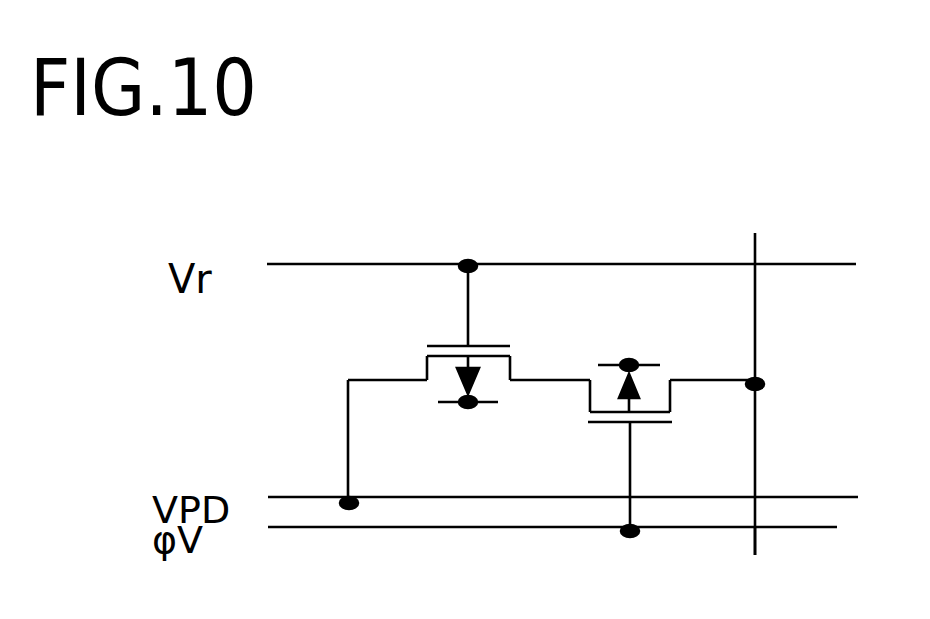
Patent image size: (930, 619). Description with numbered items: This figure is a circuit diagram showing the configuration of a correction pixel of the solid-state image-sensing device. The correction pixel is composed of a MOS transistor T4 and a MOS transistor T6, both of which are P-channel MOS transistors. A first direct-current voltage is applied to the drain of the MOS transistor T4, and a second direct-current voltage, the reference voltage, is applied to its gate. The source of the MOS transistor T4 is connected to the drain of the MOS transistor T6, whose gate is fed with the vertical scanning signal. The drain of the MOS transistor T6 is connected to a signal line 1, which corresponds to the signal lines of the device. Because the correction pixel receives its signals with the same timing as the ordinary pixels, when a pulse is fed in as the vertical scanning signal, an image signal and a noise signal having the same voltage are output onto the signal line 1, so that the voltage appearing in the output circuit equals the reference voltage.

The signal line 1 is at (756, 527).
The MOS transistor T4 is at (468, 404).
The MOS transistor T6 is at (630, 369).